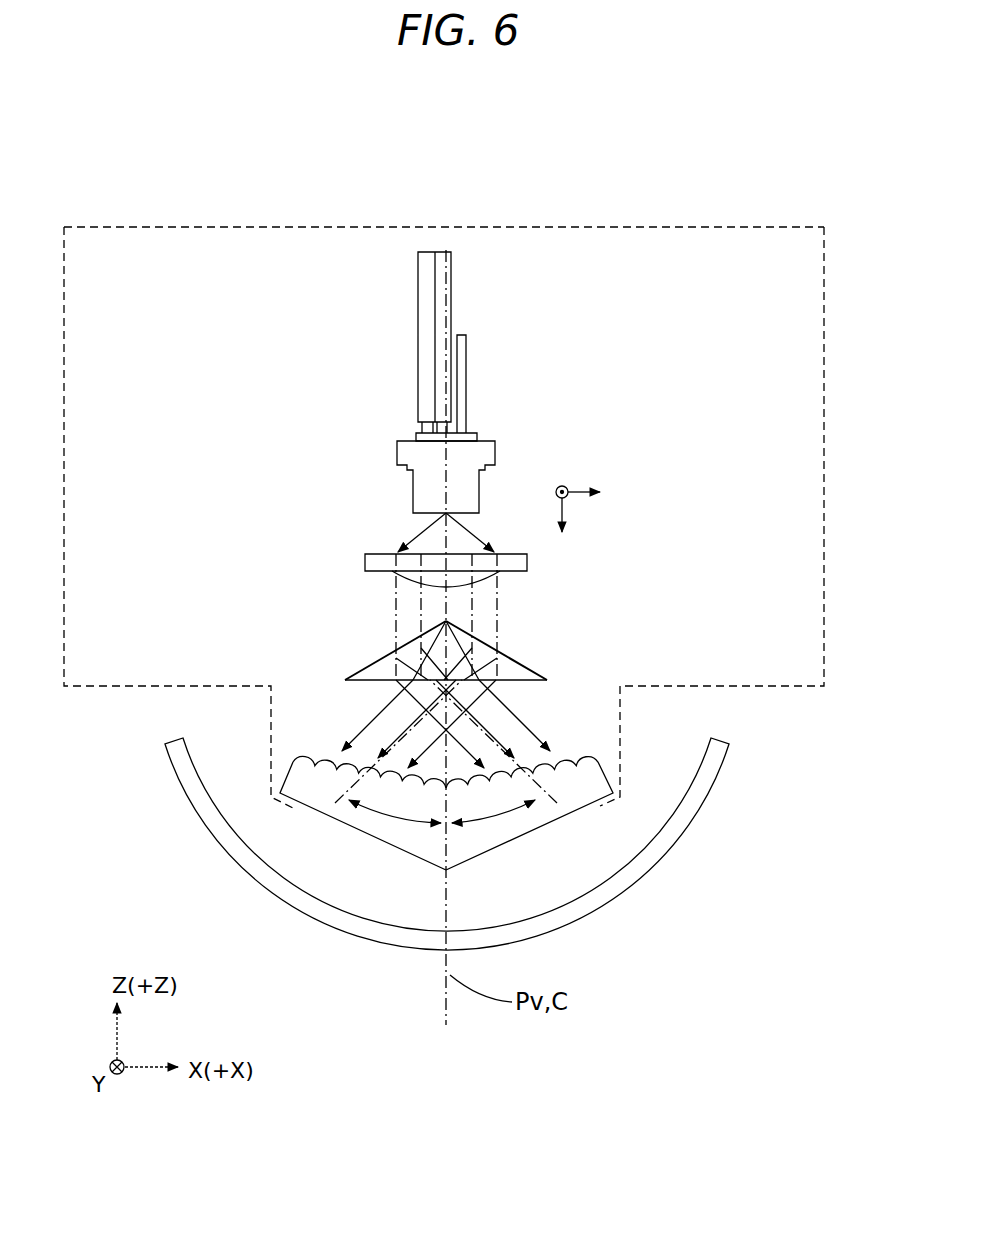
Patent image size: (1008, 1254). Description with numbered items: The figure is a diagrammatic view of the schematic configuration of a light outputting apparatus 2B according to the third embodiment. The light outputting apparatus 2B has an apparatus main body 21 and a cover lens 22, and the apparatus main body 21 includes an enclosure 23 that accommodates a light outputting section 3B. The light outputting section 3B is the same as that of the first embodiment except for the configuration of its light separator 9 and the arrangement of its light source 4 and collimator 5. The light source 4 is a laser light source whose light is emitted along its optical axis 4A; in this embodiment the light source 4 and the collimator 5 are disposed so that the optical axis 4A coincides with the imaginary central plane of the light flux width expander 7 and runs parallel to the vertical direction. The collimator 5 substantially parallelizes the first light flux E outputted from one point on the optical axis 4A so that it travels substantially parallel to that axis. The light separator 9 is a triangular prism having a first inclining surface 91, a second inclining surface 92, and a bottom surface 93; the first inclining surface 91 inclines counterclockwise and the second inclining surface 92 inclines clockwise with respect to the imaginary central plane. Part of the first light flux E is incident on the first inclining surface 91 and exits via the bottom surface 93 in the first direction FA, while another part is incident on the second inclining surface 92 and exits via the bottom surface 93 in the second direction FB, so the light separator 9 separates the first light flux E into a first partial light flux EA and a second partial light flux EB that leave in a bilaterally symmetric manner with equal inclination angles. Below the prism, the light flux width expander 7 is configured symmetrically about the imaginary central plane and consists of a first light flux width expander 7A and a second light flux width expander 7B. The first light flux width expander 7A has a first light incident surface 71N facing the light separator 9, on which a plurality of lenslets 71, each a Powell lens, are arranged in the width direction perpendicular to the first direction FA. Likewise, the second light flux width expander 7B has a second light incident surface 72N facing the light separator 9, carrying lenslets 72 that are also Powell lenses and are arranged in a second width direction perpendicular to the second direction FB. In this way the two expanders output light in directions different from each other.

The light outputting apparatus 2B is at (773, 180).
The enclosure 23 is at (810, 225).
The apparatus main body 21 is at (763, 690).
The cover lens 22 is at (700, 790).
The light outputting section 3B is at (520, 458).
The light source 4 is at (413, 510).
The optical axis 4A is at (390, 585).
The collimator 5 is at (372, 557).
The first light flux E is at (500, 580).
The light separator 9 is at (383, 650).
The first inclining surface 91 is at (498, 653).
The second inclining surface 92 is at (393, 650).
The bottom surface 93 is at (487, 682).
The first partial light flux EA is at (370, 711).
The second partial light flux EB is at (522, 711).
The first direction FA is at (362, 664).
The second direction FB is at (559, 682).
The light flux width expander 7 is at (614, 775).
The first light flux width expander 7A is at (315, 802).
The second light flux width expander 7B is at (578, 802).
The lenslets 71 is at (365, 775).
The lenslets 72 is at (527, 775).
The first light incident surface 71N is at (358, 782).
The second light incident surface 72N is at (533, 782).